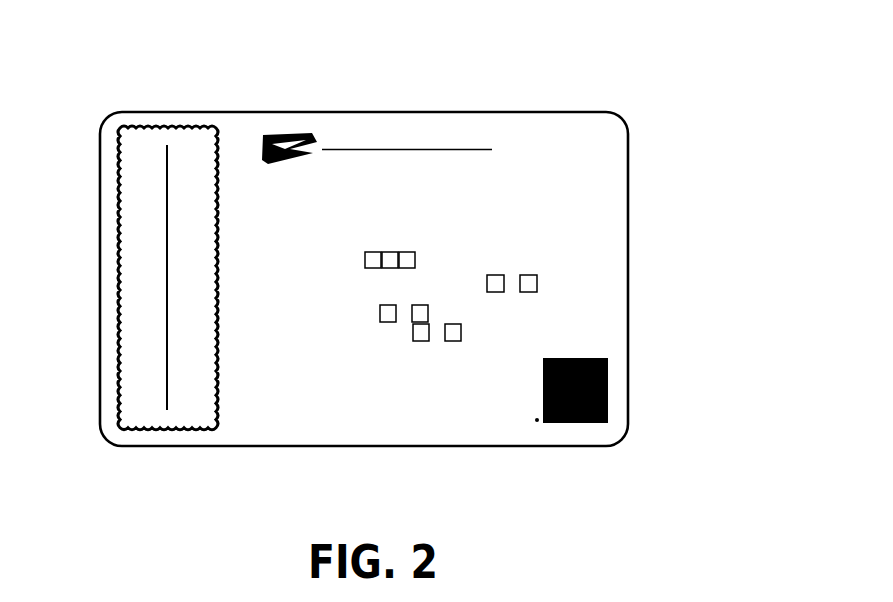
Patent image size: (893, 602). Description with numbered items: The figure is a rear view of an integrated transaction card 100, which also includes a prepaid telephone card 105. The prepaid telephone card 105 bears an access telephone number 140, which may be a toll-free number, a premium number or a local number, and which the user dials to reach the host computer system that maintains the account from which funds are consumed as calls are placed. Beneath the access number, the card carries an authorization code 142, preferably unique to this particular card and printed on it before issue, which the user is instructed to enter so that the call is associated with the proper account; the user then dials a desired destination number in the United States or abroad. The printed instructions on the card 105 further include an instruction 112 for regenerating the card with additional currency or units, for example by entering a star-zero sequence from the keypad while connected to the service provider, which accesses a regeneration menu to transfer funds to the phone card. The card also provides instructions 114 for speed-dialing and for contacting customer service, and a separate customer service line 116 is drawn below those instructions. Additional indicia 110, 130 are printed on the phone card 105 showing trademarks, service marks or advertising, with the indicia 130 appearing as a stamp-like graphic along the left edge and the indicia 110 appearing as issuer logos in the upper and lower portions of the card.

The integrated transaction card 100 is at (732, 78).
The prepaid telephone card 105 is at (628, 238).
The additional indicia 110 is at (338, 130).
The regeneration instruction 112 is at (263, 313).
The speed-dialing and customer service instructions 114 is at (263, 334).
The customer service telephone number 116 is at (297, 347).
The additional indicia 130 is at (150, 276).
The access telephone number 140 is at (368, 190).
The authorization code 142 is at (505, 200).